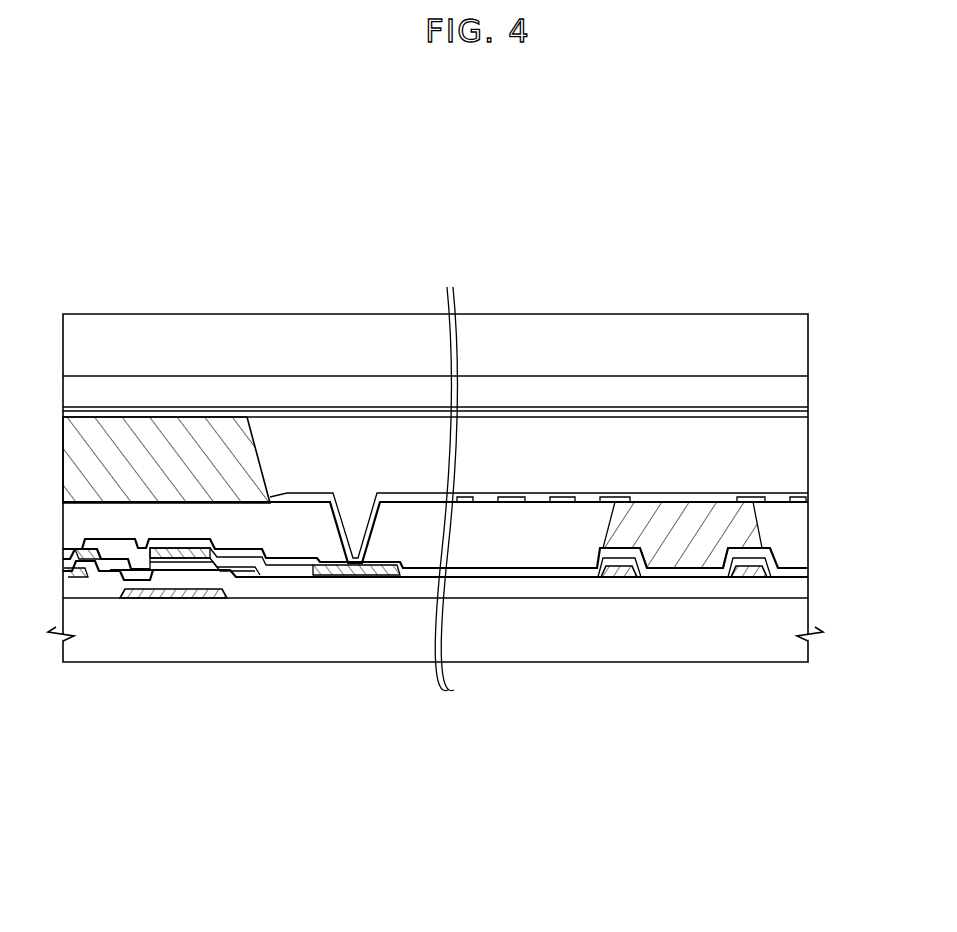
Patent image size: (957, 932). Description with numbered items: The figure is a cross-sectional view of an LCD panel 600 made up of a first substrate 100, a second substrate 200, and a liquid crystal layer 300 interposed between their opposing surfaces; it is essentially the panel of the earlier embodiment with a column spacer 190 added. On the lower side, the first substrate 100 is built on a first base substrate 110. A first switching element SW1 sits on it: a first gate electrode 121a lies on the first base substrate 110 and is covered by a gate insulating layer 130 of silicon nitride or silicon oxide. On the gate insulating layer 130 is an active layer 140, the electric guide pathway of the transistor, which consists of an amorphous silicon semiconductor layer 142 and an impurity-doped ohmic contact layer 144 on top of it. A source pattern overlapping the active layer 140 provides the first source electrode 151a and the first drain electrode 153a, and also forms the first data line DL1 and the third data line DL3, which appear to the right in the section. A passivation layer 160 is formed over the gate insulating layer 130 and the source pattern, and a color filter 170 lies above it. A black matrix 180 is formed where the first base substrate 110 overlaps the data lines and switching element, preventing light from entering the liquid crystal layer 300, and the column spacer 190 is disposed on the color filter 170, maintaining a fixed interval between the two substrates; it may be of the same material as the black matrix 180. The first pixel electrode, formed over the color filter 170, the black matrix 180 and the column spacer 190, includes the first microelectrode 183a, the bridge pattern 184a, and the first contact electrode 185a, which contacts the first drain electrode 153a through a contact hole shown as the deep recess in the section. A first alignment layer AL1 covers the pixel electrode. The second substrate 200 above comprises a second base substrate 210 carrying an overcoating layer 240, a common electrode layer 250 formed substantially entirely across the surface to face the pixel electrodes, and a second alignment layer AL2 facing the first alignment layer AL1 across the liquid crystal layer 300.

The LCD panel 600 is at (427, 230).
The first substrate 100 is at (827, 486).
The second substrate 200 is at (827, 314).
The liquid crystal layer 300 is at (827, 428).
The first base substrate 110 is at (491, 657).
The gate insulating layer 130 is at (538, 591).
The color filter 170 is at (558, 558).
The first alignment layer AL1 is at (487, 505).
The second alignment layer AL2 is at (480, 415).
The column spacer 190 is at (120, 437).
The second base substrate 210 is at (220, 323).
The overcoating layer 240 is at (340, 392).
The common electrode layer 250 is at (420, 410).
The black matrix 180 is at (697, 512).
The first microelectrode 183a is at (610, 497).
The bridge pattern 184a is at (417, 500).
The first contact electrode 185a is at (357, 578).
The first switching element SW1 is at (191, 661).
The first source electrode 151a is at (112, 578).
The first gate electrode 121a is at (157, 598).
The first drain electrode 153a is at (207, 556).
The active layer 140 is at (276, 648).
The semiconductor layer 142 is at (260, 578).
The ohmic contact layer 144 is at (285, 578).
The first data line DL1 is at (612, 580).
The third data line DL3 is at (748, 578).
The passivation layer 160 is at (690, 580).